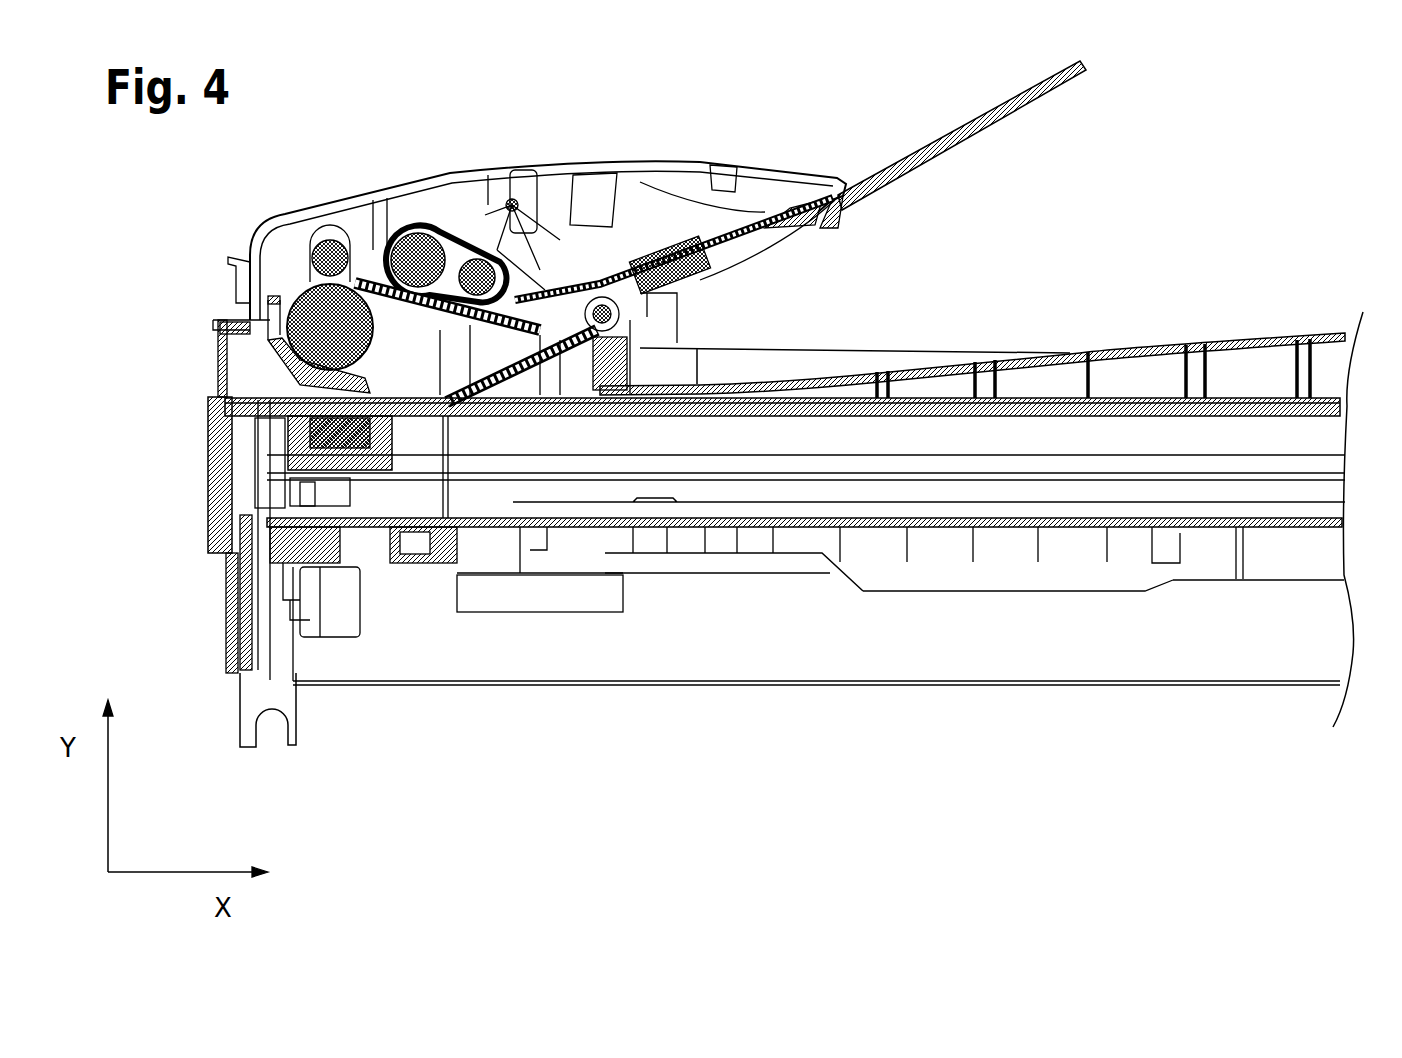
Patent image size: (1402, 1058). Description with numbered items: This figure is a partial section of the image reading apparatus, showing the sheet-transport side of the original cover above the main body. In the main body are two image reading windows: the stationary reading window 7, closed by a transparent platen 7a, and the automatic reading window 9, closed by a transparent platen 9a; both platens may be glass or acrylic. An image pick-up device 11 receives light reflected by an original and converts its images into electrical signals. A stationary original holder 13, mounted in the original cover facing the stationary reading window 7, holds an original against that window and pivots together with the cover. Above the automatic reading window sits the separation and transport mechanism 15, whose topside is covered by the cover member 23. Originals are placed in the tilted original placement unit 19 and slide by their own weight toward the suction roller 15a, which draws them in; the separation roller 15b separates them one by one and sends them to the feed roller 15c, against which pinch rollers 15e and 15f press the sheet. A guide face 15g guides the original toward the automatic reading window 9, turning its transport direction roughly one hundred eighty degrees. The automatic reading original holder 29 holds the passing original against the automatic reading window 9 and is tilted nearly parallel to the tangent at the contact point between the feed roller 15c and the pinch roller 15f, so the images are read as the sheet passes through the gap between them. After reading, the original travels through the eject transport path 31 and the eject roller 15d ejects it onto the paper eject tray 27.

The separation and transport mechanism 15 is at (442, 212).
The suction roller 15a is at (480, 258).
The separation roller 15b is at (425, 230).
The feed roller 15c is at (304, 288).
The eject roller 15d is at (598, 290).
The pinch roller 15e is at (318, 240).
The pinch roller 15f is at (220, 362).
The guide face 15g is at (290, 304).
The cover member 23 is at (368, 197).
The original placement unit 19 is at (777, 205).
The paper eject tray 27 is at (891, 560).
The stationary original holder 13 is at (1008, 395).
The stationary reading window 7 is at (794, 538).
The transparent platen 7a is at (891, 560).
The automatic reading window 9 is at (393, 590).
The transparent platen 9a is at (331, 489).
The image pick-up device 11 is at (422, 416).
The automatic reading original holder 29 is at (458, 416).
The eject transport path 31 is at (523, 413).